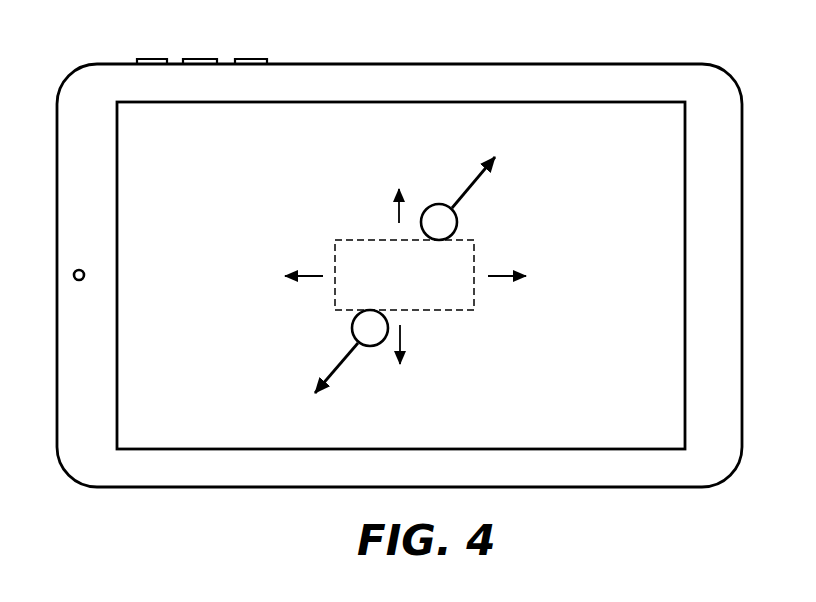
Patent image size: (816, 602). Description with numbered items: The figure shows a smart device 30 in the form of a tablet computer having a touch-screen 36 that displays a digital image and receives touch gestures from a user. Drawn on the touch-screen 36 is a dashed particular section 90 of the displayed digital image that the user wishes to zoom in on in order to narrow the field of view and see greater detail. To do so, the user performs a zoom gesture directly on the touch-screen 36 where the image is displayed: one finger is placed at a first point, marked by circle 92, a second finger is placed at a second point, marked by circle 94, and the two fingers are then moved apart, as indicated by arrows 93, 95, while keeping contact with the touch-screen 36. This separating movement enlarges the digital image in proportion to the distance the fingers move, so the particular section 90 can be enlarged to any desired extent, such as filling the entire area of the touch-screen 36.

The smart device 30 is at (541, 64).
The touch-screen 36 is at (481, 101).
The particular section 90 is at (474, 255).
The circle 92 is at (352, 328).
The arrow 93 is at (346, 347).
The circle 94 is at (440, 204).
The arrow 95 is at (470, 190).